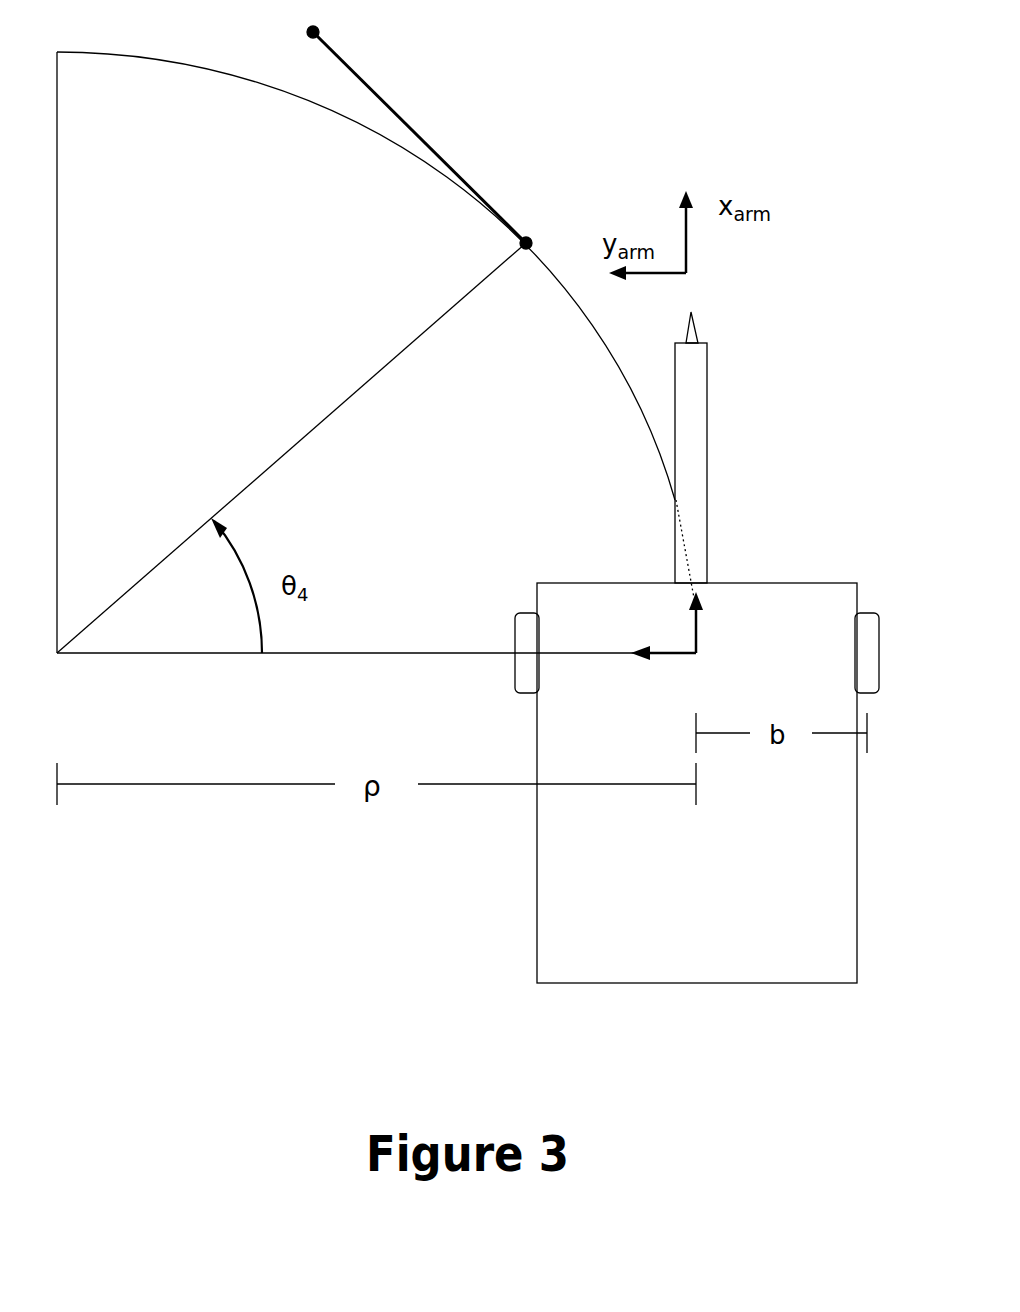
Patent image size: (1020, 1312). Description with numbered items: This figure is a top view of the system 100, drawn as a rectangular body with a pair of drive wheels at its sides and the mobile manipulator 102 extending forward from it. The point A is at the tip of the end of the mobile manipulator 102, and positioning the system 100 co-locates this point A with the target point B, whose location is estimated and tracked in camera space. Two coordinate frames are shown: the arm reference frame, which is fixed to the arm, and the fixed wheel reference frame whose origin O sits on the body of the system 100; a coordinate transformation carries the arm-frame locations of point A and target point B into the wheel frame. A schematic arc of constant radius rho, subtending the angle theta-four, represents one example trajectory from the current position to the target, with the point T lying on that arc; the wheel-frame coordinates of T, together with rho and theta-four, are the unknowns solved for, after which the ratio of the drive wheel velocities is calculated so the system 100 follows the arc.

The system 100 is at (697, 827).
The mobile manipulator 102 is at (731, 446).
The point A is at (711, 319).
The target point B is at (296, 22).
The point T is at (522, 223).
The origin of the wheel coordinate system O is at (679, 636).